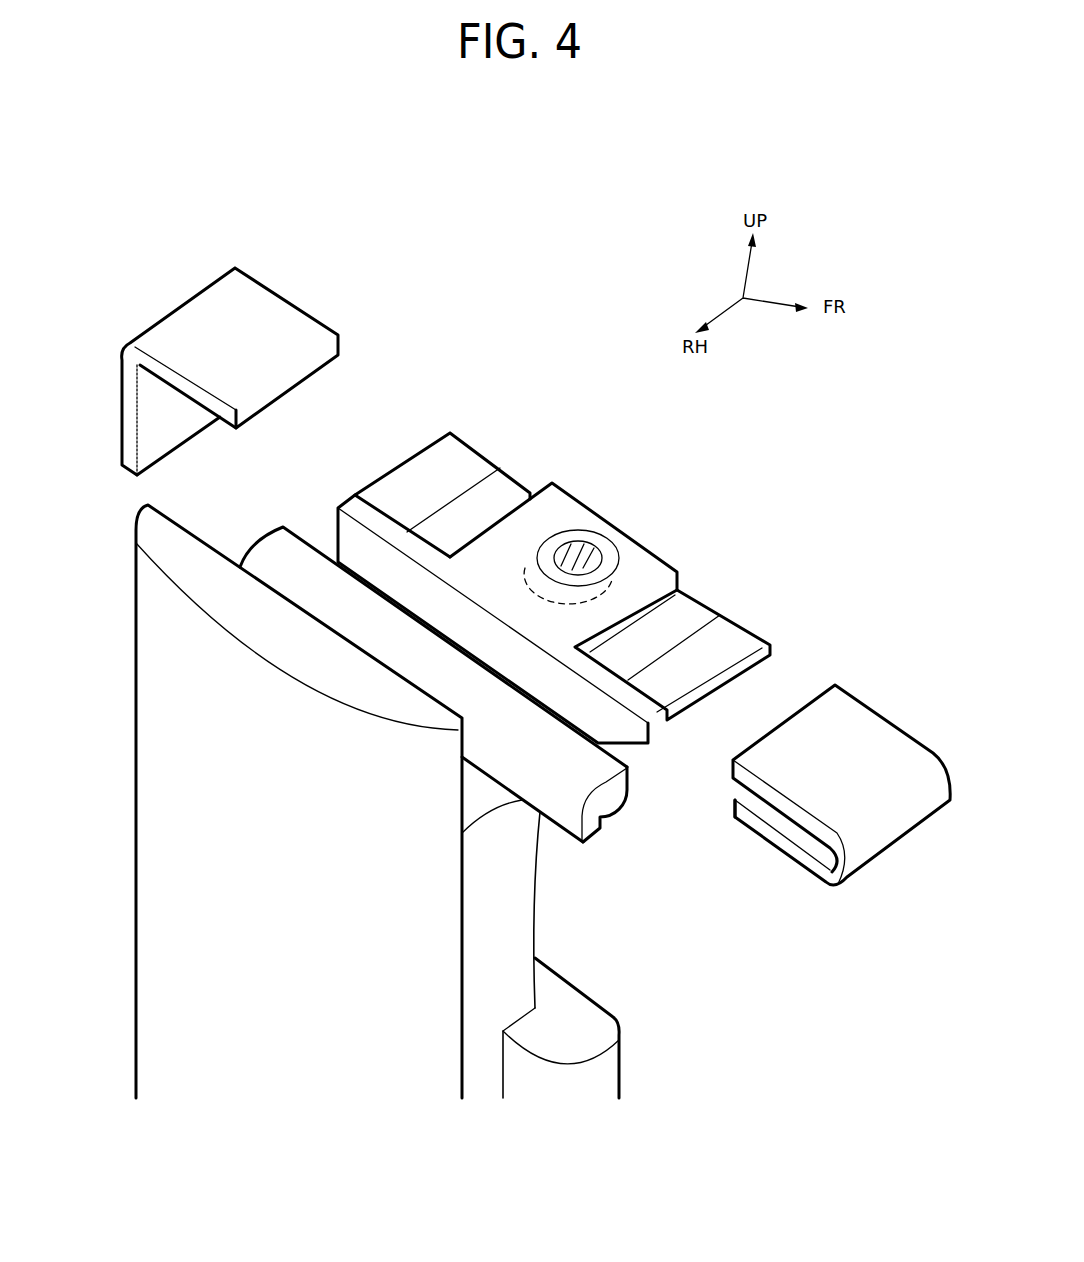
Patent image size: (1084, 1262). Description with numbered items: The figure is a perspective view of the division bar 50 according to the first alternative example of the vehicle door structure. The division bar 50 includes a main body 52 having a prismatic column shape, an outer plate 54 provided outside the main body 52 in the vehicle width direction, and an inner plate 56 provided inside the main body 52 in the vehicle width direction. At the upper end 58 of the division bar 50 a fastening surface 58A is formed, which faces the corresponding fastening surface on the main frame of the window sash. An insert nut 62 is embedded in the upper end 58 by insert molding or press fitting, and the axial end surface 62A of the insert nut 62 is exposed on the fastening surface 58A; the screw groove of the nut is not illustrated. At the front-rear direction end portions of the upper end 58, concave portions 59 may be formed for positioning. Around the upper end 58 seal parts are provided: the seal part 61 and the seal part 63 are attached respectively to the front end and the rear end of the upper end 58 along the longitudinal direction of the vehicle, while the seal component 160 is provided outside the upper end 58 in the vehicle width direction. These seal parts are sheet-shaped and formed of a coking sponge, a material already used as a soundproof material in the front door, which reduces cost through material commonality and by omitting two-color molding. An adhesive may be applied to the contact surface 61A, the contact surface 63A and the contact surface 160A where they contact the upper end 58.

The division bar 50 is at (581, 573).
The main body 52 is at (505, 920).
The outer plate 54 is at (100, 863).
The inner plate 56 is at (637, 978).
The upper end 58 is at (581, 609).
The fastening surface 58A is at (560, 508).
The concave portion 59 is at (497, 493).
The seal part 61 is at (829, 742).
The contact surface 61A is at (795, 832).
The insert nut 62 is at (623, 592).
The axial end surface 62A is at (603, 545).
The seal part 63 is at (290, 382).
The contact surface 63A is at (168, 420).
The seal component 160 is at (451, 656).
The contact surface 160A is at (603, 823).